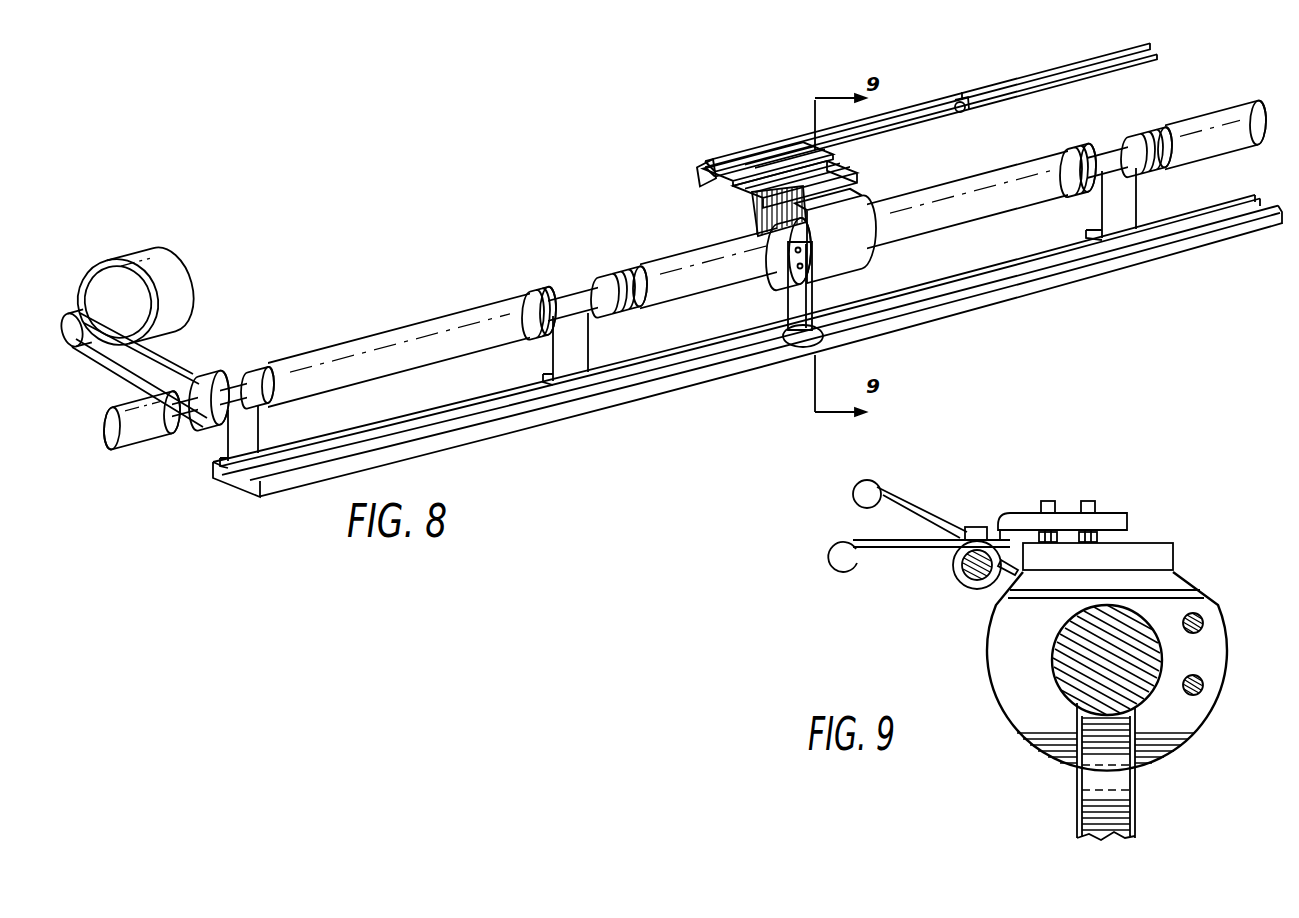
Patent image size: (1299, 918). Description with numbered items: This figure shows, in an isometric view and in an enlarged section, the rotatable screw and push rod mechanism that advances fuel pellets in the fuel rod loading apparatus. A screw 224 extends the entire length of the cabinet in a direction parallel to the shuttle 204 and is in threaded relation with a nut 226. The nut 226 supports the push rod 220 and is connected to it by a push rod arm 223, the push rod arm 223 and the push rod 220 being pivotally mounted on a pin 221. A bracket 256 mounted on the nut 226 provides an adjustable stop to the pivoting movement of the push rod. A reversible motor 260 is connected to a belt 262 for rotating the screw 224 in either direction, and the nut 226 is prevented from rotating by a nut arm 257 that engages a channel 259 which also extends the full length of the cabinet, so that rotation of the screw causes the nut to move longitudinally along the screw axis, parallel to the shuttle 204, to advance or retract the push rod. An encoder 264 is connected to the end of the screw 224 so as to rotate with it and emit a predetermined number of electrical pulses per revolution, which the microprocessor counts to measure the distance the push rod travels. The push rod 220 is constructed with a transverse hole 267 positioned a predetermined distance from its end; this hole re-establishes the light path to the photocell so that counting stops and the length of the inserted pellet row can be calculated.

In FIG. 8, the shuttle 204 is at (1136, 66).
In FIG. 8, the push rod 220 is at (966, 82).
In FIG. 9, the push rod 220 is at (833, 550).
In FIG. 9, the pin 221 is at (968, 588).
In FIG. 8, the push rod arm 223 is at (738, 187).
In FIG. 9, the push rod arm 223 is at (920, 548).
In FIG. 8, the screw 224 is at (420, 333).
In FIG. 9, the screw 224 is at (1066, 650).
In FIG. 8, the nut 226 is at (878, 257).
In FIG. 9, the nut 226 is at (1188, 598).
In FIG. 8, the bracket 256 is at (850, 178).
In FIG. 9, the bracket 256 is at (1018, 512).
In FIG. 8, the nut arm 257 is at (793, 299).
In FIG. 9, the nut arm 257 is at (1106, 771).
In FIG. 8, the channel 259 is at (690, 376).
In FIG. 8, the motor 260 is at (199, 316).
In FIG. 8, the belt 262 is at (122, 364).
In FIG. 8, the encoder 264 is at (122, 416).
In FIG. 8, the transverse hole 267 is at (958, 113).